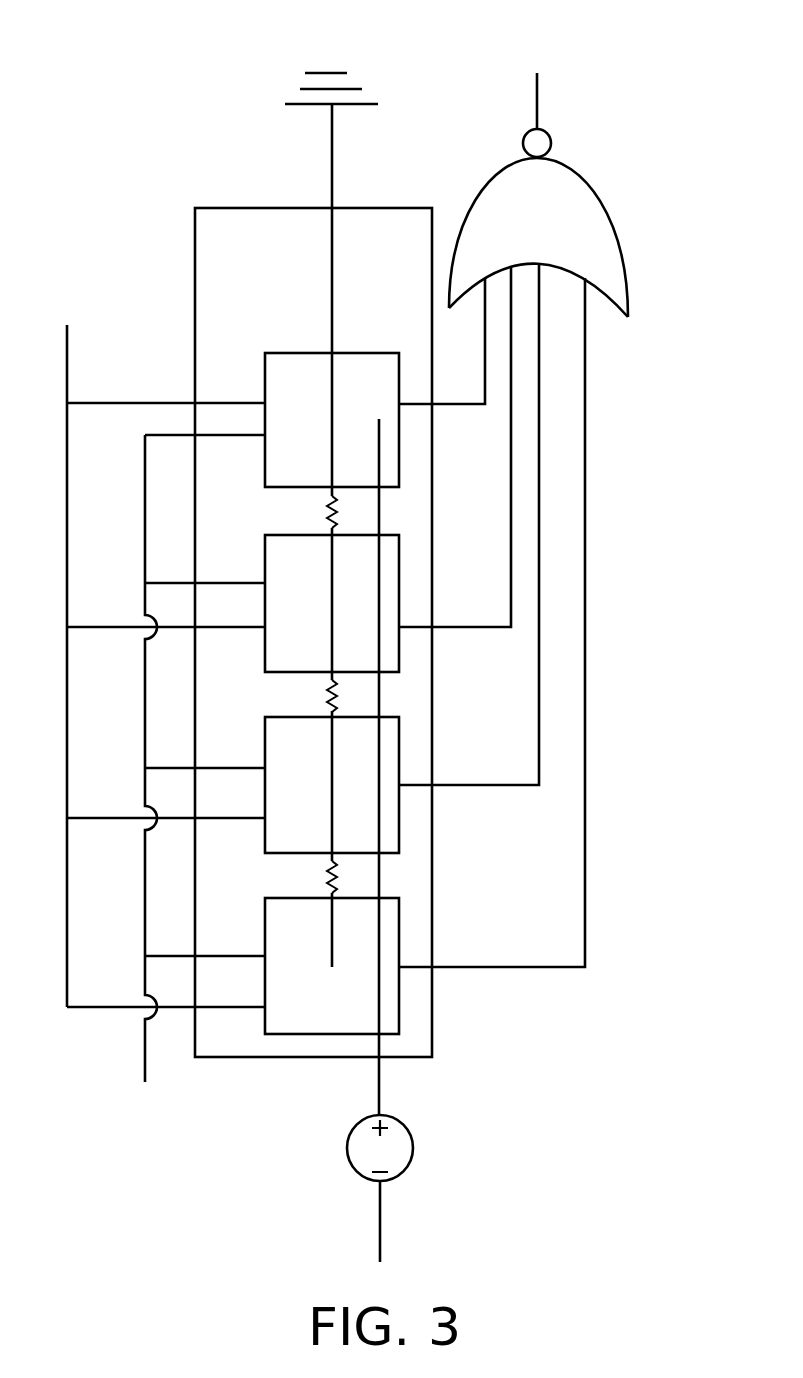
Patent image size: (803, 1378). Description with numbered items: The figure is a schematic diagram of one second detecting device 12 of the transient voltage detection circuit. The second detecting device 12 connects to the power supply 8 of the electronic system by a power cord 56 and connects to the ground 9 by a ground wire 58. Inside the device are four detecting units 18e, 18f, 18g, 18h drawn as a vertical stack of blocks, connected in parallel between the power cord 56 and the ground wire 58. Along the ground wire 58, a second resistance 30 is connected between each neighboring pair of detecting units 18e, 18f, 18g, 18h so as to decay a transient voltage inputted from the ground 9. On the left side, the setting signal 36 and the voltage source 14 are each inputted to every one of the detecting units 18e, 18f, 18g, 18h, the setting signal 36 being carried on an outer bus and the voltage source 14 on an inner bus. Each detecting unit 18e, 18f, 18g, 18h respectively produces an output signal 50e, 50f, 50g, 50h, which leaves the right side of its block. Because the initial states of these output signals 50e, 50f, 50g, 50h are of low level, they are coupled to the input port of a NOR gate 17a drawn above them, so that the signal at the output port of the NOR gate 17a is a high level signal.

The ground 9 is at (347, 73).
The ground wire 58 is at (332, 150).
The second detecting device 12 is at (195, 267).
The setting signal 36 is at (143, 666).
The voltage source 14 is at (205, 758).
The detecting unit 18h is at (265, 374).
The detecting unit 18g is at (265, 550).
The detecting unit 18f is at (265, 735).
The detecting unit 18e is at (262, 922).
The second resistance 30 is at (330, 880).
The output signal 50h is at (477, 404).
The output signal 50g is at (498, 627).
The output signal 50f is at (520, 785).
The output signal 50e is at (527, 967).
The NOR gate 17a is at (612, 282).
The power cord 56 is at (382, 1073).
The power supply 8 is at (413, 1155).